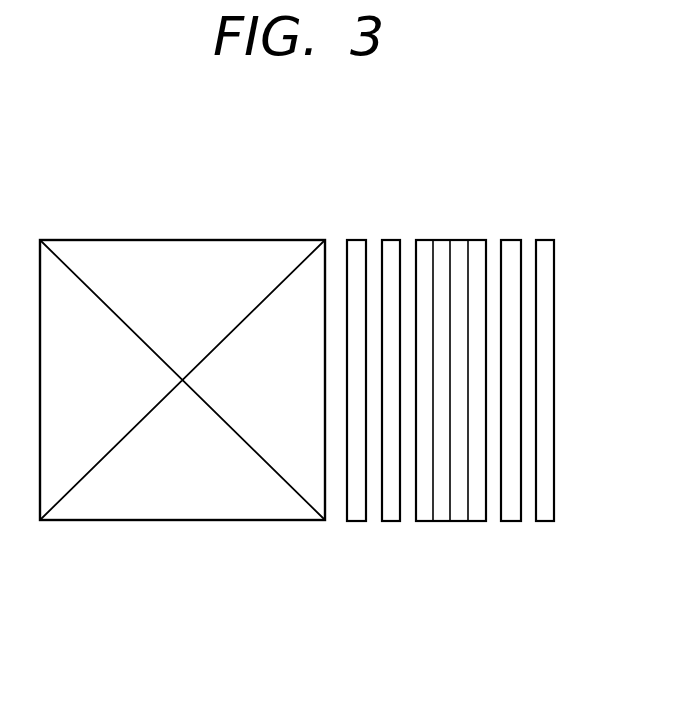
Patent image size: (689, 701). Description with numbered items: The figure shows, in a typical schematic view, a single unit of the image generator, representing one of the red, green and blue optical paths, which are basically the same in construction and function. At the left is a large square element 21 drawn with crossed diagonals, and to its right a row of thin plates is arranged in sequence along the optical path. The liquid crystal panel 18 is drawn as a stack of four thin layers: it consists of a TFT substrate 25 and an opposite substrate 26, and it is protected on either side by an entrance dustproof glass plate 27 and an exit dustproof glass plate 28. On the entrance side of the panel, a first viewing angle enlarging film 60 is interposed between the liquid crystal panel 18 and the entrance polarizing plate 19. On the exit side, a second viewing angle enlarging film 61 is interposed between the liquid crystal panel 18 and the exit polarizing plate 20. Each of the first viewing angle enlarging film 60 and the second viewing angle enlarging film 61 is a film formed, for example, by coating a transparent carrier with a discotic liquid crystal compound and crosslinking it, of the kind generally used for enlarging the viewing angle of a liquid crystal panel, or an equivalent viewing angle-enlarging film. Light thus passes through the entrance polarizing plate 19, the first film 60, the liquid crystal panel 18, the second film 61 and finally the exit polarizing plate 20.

The light source unit 21 is at (110, 240).
The exit polarizing plate 20 is at (354, 240).
The second viewing angle enlarging film 61 is at (390, 240).
The liquid crystal panel 18 is at (453, 386).
The first viewing angle enlarging film 60 is at (510, 240).
The entrance polarizing plate 19 is at (545, 240).
The exit dustproof glass plate 28 is at (425, 522).
The opposite substrate 26 is at (445, 522).
The TFT substrate 25 is at (460, 522).
The entrance dustproof glass plate 27 is at (478, 522).